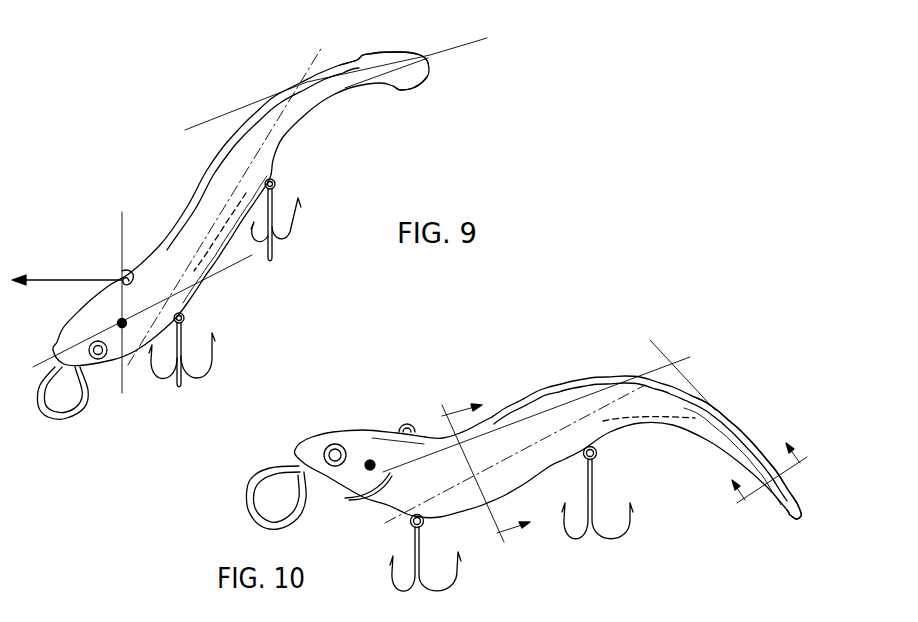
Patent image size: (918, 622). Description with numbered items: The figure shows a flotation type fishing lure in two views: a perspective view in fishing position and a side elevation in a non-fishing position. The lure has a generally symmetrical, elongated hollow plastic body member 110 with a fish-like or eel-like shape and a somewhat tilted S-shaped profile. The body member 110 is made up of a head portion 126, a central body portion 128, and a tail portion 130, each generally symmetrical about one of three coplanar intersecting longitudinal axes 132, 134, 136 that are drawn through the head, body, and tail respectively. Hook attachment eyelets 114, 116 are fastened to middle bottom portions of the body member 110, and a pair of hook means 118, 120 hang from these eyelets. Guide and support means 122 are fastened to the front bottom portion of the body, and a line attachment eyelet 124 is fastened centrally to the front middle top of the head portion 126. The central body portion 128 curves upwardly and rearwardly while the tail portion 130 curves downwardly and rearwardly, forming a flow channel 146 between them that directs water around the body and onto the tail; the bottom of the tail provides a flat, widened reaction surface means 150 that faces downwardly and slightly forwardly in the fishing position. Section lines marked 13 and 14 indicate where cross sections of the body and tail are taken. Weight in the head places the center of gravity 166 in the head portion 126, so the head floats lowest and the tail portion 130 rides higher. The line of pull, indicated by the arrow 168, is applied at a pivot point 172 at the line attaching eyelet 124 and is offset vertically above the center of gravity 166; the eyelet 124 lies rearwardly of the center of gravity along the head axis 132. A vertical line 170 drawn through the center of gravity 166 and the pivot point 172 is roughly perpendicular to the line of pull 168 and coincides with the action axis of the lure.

In FIG. 9, the body member 110 is at (199, 183).
In FIG. 10, the body member 110 is at (560, 388).
In FIG. 10, the eyelet 114 is at (410, 526).
In FIG. 10, the eyelet 116 is at (596, 457).
In FIG. 9, the hook means 118 is at (180, 395).
In FIG. 10, the hook means 118 is at (400, 594).
In FIG. 9, the hook means 120 is at (296, 225).
In FIG. 10, the hook means 120 is at (600, 545).
In FIG. 9, the guide and support means 122 is at (67, 419).
In FIG. 10, the guide and support means 122 is at (252, 505).
In FIG. 10, the eyelet 124 is at (407, 419).
In FIG. 9, the head portion 126 is at (73, 328).
In FIG. 10, the head portion 126 is at (350, 428).
In FIG. 9, the central body portion 128 is at (224, 270).
In FIG. 10, the central body portion 128 is at (530, 482).
In FIG. 9, the tail portion 130 is at (364, 56).
In FIG. 10, the tail portion 130 is at (745, 432).
In FIG. 9, the longitudinal axis 132 is at (48, 365).
In FIG. 10, the longitudinal axis 132 is at (287, 437).
In FIG. 9, the longitudinal axis 134 is at (264, 150).
In FIG. 10, the longitudinal axis 134 is at (624, 374).
In FIG. 9, the longitudinal axis 136 is at (450, 44).
In FIG. 10, the longitudinal axis 136 is at (693, 384).
In FIG. 10, the flow channel 146 is at (674, 475).
In FIG. 9, the reaction surface means 150 is at (398, 91).
In FIG. 10, the reaction surface means 150 is at (781, 506).
In FIG. 9, the center of gravity 166 is at (119, 320).
In FIG. 10, the center of gravity 166 is at (368, 470).
In FIG. 9, the arrow 168 is at (68, 280).
In FIG. 9, the vertical line 170 is at (121, 236).
In FIG. 9, the pivot point 172 is at (122, 273).
In FIG. 10, the section line 13- 13 is at (497, 470).
In FIG. 10, the section line 14- 14 is at (761, 464).